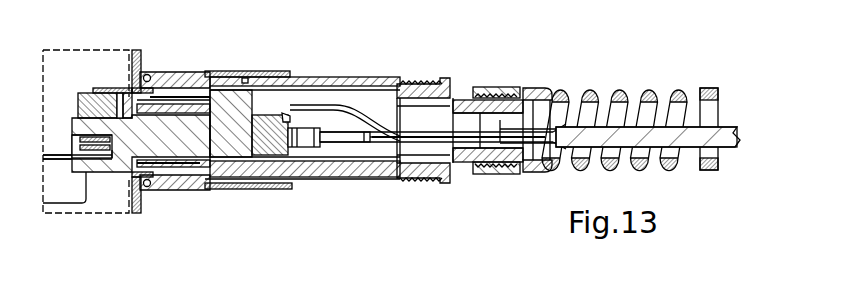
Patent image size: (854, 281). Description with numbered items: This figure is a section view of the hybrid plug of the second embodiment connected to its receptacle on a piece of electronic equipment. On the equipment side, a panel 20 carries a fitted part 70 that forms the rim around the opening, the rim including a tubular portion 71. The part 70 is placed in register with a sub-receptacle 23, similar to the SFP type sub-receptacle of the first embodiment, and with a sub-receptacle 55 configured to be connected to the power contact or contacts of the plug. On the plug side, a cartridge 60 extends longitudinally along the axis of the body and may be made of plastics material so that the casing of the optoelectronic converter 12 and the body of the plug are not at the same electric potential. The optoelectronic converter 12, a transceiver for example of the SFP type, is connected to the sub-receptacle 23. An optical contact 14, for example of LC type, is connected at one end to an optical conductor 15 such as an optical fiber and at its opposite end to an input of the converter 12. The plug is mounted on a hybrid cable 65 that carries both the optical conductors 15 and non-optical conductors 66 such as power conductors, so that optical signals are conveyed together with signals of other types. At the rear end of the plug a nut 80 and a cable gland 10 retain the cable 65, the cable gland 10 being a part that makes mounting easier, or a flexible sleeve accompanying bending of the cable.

The cable gland 10 is at (543, 88).
The optoelectronic converter 12 is at (272, 118).
The optical contact 14 is at (300, 136).
The optical conductor 15 is at (352, 140).
The panel 20 is at (108, 200).
The sub-receptacle 23 is at (76, 135).
The sub-receptacle 55 is at (82, 98).
The cartridge 60 is at (243, 100).
The hybrid cable 65 is at (630, 137).
The non-optical conductor 66 is at (375, 125).
The part 70 is at (142, 60).
The tubular portion 71 is at (160, 77).
The nut 80 is at (462, 86).